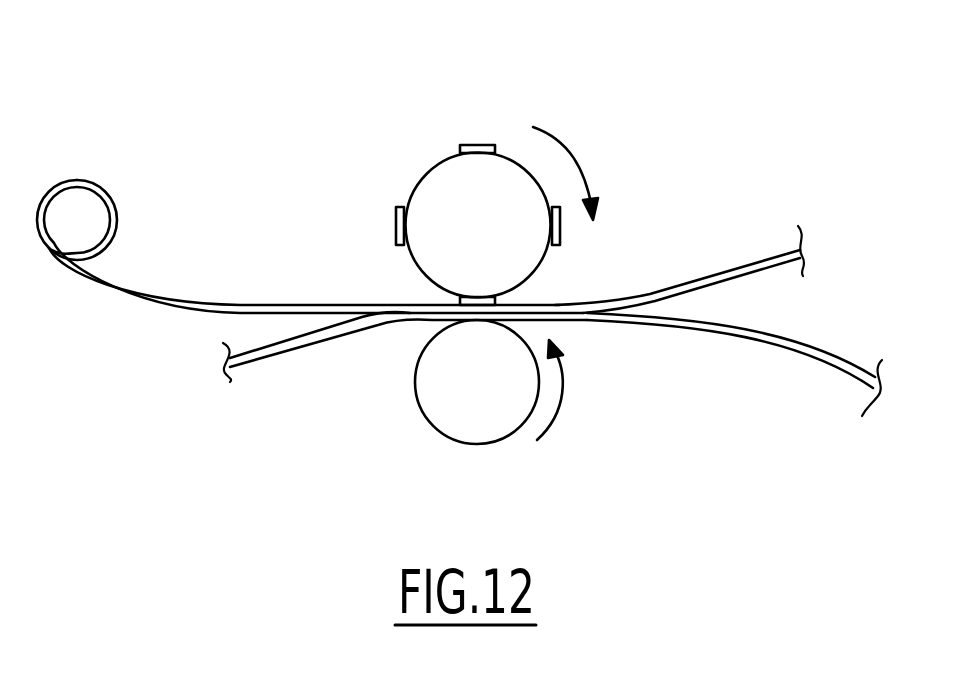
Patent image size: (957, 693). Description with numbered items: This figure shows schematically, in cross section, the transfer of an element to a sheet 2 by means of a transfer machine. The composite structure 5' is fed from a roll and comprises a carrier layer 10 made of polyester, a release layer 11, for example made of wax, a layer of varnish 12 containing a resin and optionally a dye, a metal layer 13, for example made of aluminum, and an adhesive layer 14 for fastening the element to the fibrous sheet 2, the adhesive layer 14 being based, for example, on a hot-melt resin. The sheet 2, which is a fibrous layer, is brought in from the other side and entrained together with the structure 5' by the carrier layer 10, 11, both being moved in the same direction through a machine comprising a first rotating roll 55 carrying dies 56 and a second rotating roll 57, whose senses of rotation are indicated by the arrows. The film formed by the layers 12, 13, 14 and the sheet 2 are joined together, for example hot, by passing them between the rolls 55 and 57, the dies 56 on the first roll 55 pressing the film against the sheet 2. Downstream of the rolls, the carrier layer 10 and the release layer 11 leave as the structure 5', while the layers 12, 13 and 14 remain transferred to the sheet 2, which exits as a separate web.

The sheet 2 is at (482, 415).
The composite structure 5' is at (679, 241).
The carrier layer 10 is at (310, 279).
The release layer 11 is at (167, 307).
The layer of varnish 12 is at (335, 415).
The metal layer 13 is at (335, 415).
The adhesive layer 14 is at (254, 357).
The first rotating roll 55 is at (447, 177).
The dies 56 is at (481, 145).
The second rotating roll 57 is at (447, 405).